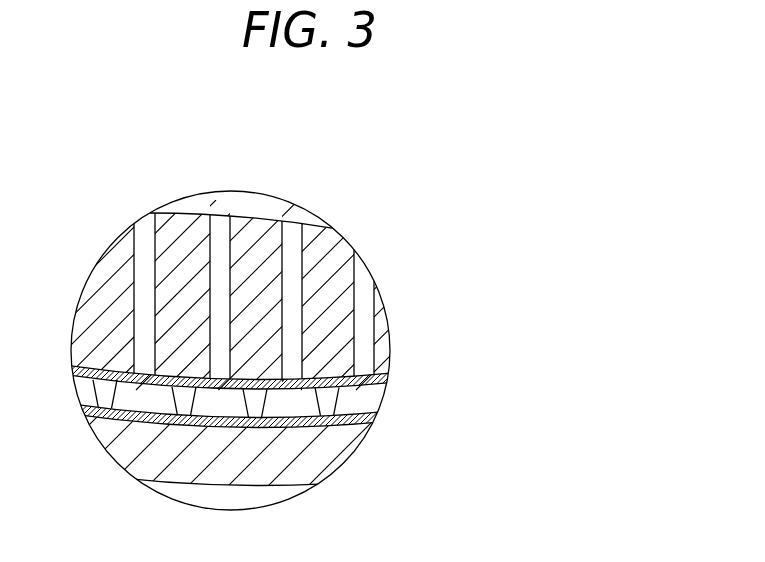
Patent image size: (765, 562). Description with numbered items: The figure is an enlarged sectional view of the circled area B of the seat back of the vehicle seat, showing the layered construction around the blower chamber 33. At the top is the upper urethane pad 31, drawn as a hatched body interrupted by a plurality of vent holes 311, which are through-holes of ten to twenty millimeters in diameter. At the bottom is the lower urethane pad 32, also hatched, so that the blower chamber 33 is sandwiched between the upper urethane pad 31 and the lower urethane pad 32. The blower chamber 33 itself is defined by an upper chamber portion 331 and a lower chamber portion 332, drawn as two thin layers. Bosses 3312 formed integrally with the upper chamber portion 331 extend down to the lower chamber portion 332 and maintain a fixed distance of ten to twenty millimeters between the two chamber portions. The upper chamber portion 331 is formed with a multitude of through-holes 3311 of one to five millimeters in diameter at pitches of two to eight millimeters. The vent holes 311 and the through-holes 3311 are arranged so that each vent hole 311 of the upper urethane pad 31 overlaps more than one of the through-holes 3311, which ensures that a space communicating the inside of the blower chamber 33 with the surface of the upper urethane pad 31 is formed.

The area B is at (258, 191).
The upper urethane pad 31 is at (333, 260).
The vent holes 311 is at (293, 298).
The blower chamber 33 is at (284, 381).
The upper chamber portion 331 is at (253, 372).
The through-holes 3311 is at (363, 375).
The bosses 3312 is at (330, 402).
The lower chamber portion 332 is at (370, 418).
The lower urethane pad 32 is at (258, 470).